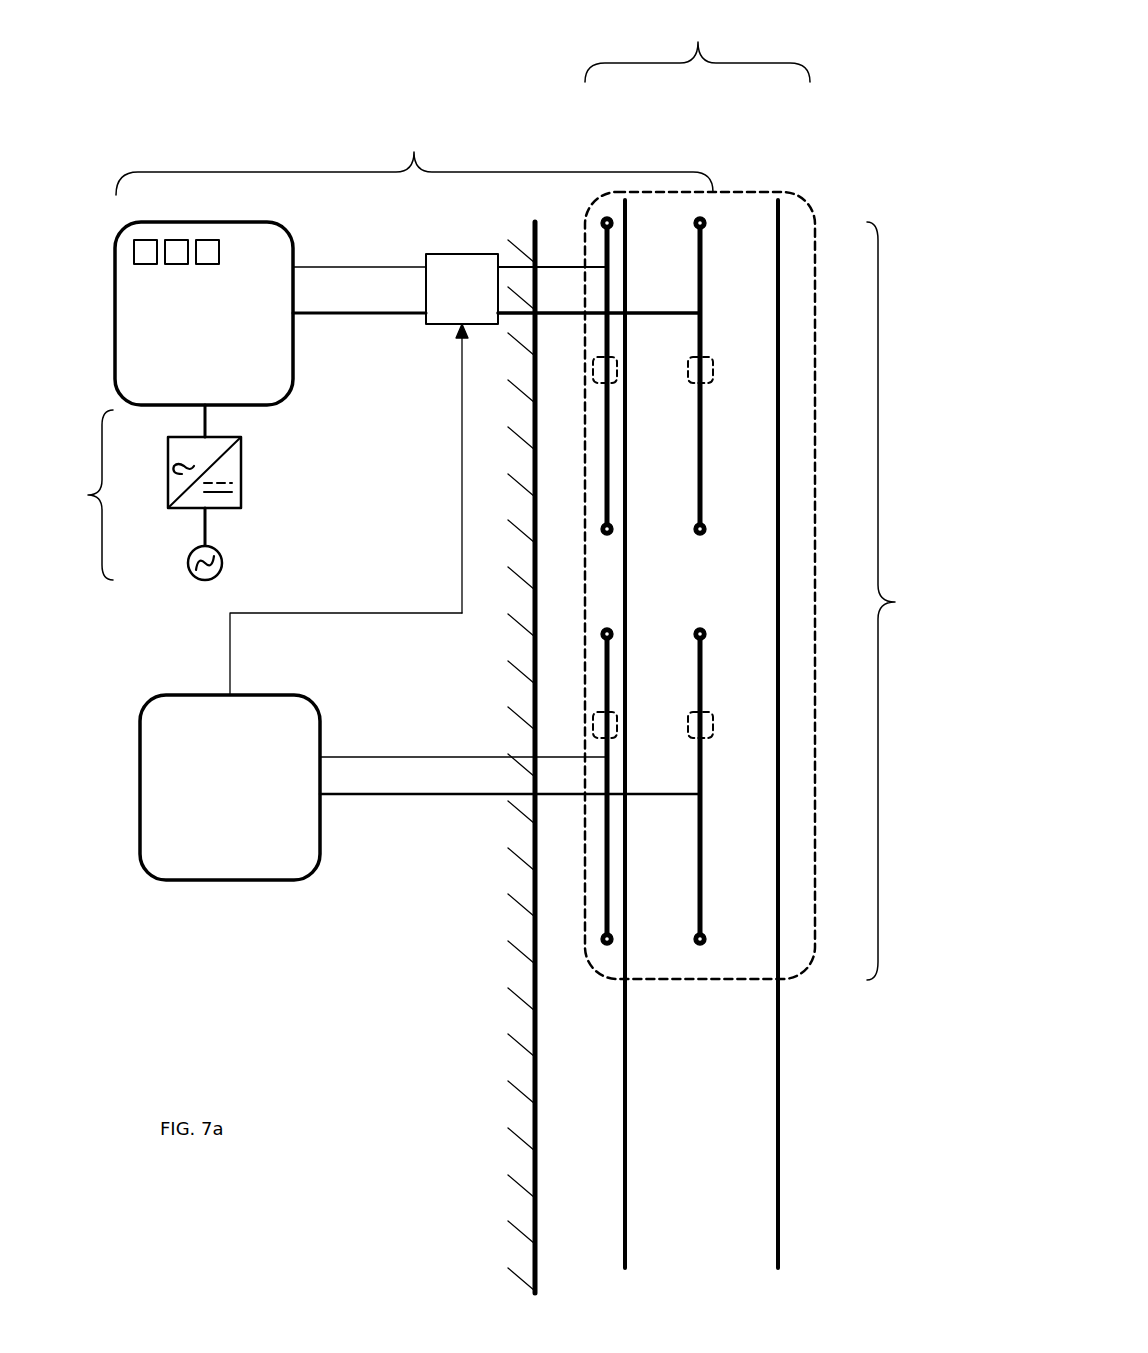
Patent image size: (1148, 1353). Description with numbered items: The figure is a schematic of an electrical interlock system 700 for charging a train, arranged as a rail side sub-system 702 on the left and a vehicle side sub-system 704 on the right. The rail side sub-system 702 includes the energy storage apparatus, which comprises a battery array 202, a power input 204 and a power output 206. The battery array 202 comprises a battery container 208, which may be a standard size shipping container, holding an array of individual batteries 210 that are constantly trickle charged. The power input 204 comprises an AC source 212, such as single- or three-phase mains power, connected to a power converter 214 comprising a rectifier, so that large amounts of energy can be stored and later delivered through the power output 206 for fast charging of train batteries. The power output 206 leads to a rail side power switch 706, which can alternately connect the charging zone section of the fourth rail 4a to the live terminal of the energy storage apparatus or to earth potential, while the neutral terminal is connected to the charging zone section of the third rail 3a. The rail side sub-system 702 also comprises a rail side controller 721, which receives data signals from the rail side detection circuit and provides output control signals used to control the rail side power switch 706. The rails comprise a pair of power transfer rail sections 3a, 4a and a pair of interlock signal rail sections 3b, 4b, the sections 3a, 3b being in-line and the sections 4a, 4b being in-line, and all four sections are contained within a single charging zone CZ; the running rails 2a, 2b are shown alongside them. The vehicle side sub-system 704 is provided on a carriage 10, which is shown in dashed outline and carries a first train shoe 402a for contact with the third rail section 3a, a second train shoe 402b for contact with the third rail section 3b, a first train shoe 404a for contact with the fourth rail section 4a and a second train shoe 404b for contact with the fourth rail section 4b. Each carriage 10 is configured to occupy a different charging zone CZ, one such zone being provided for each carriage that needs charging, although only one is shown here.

The electrical interlock system 700 is at (906, 114).
The rail side sub-system 702 is at (414, 156).
The vehicle side sub-system 704 is at (697, 43).
The rail side power switch 706 is at (563, 433).
The carriage 10 is at (815, 208).
The battery array 202 is at (204, 313).
The power input 204 is at (188, 492).
The power output 206 is at (304, 321).
The battery container 208 is at (173, 296).
The individual batteries 210 is at (145, 247).
The AC source 212 is at (222, 565).
The power converter 214 is at (233, 468).
The rail side controller 721 is at (420, 746).
The first wall line 2a is at (625, 560).
The second wall line 2b is at (778, 560).
The power transfer rail section 3a is at (605, 463).
The power transfer rail section 4a is at (698, 463).
The interlock signal rail section 3b is at (605, 873).
The interlock signal rail section 4b is at (698, 873).
The first train shoe 402a is at (618, 363).
The first train shoe 404a is at (715, 365).
The second train shoe 402b is at (594, 725).
The second train shoe 404b is at (716, 727).
The charging zone CZ is at (902, 601).